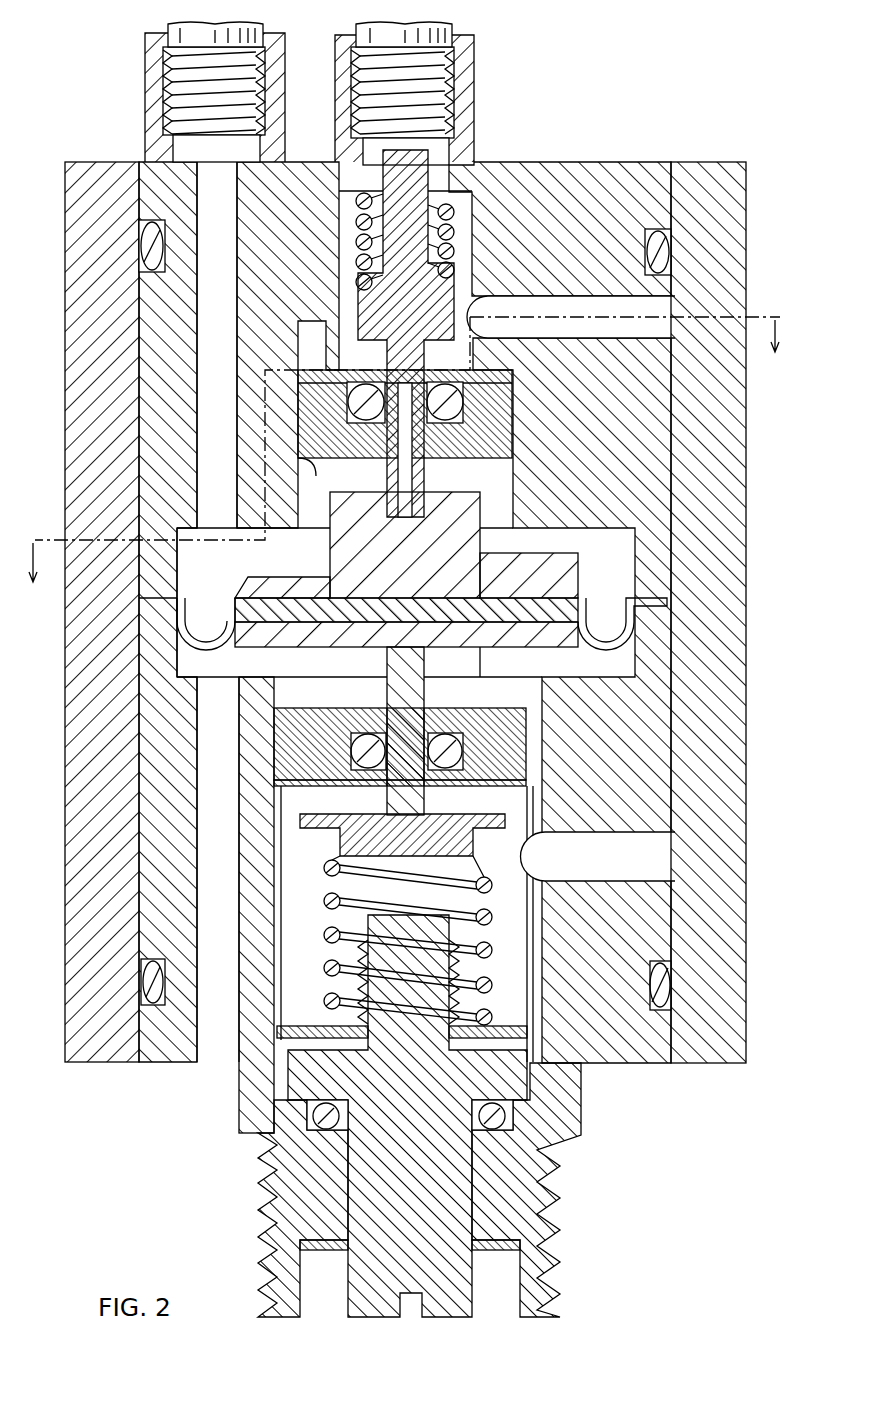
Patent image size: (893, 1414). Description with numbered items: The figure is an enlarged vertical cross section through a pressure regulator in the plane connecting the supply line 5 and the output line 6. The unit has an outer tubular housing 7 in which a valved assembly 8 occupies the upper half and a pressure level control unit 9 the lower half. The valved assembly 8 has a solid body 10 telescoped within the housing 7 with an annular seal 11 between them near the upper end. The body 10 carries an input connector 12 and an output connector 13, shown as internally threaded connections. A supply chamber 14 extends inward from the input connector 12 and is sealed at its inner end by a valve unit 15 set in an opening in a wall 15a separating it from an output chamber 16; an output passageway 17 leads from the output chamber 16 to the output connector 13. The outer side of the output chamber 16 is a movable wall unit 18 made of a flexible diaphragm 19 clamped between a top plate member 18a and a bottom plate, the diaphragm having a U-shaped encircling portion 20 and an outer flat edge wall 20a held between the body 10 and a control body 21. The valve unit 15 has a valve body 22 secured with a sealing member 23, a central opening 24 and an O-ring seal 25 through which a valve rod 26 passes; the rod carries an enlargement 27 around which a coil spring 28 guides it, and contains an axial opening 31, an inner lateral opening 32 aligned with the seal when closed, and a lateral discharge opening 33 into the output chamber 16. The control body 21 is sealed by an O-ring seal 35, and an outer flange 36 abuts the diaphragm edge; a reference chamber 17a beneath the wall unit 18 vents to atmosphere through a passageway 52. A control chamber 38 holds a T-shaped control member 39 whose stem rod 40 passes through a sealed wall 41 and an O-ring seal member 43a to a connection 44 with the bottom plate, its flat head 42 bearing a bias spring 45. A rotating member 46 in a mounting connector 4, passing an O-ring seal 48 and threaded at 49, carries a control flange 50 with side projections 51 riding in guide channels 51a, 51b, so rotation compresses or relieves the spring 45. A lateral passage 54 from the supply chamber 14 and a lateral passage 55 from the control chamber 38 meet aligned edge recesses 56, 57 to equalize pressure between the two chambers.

The mounting connector 4 is at (538, 1193).
The supply line 5 is at (440, 30).
The output line 6 is at (170, 32).
The outer tubular housing 7 is at (727, 416).
The valved assembly 8 is at (594, 443).
The pressure level control unit 9 is at (655, 735).
The solid body 10 is at (610, 182).
The annular seal 11 is at (671, 259).
The input connector 12 is at (472, 100).
The output connector 13 is at (162, 96).
The supply chamber 14 is at (467, 224).
The valve unit 15 is at (476, 419).
The wall 15a is at (512, 500).
The output chamber 16 is at (182, 573).
The output passageway 17 is at (215, 318).
The reference chamber 17a is at (218, 668).
The movable outer wall unit 18 is at (222, 594).
The top plate member 18a is at (549, 553).
The flexible diaphragm 19 is at (590, 572).
The U-shaped encircling portion 20 is at (599, 644).
The outer flat edge wall 20a is at (640, 590).
The control body 21 is at (660, 710).
The valve body 22 is at (298, 478).
The sealing member 23 is at (505, 350).
The central opening 24 is at (345, 358).
The O-ring seal 25 is at (298, 405).
The valve rod 26 is at (411, 534).
The enlargement 27 is at (392, 313).
The coil spring 28 is at (455, 212).
The axial opening 31 is at (427, 450).
The inner lateral opening 32 is at (417, 403).
The lateral discharge opening 33 is at (390, 478).
The O-ring seal 35 is at (676, 970).
The outer flange 36 is at (649, 637).
The control chamber 38 is at (291, 948).
The T-shaped control member 39 is at (525, 857).
The stem rod 40 is at (421, 694).
The sealed wall 41 is at (284, 717).
The flat head 42 is at (309, 828).
The O-ring seal member 43a is at (386, 720).
The connection 44 is at (384, 668).
The bias spring 45 is at (505, 916).
The rotating member 46 is at (396, 1187).
The O-ring seal 48 is at (509, 1116).
The threads 49 is at (455, 975).
The control flange 50 is at (505, 1023).
The side projections 51 is at (279, 810).
The guide channel 51a is at (275, 1100).
The guide channel 51b is at (544, 1028).
The passageway 52 is at (224, 1050).
The lateral passage 54 is at (655, 307).
The lateral passage 55 is at (655, 860).
The edge recess 56 is at (646, 516).
The edge recess 57 is at (620, 739).